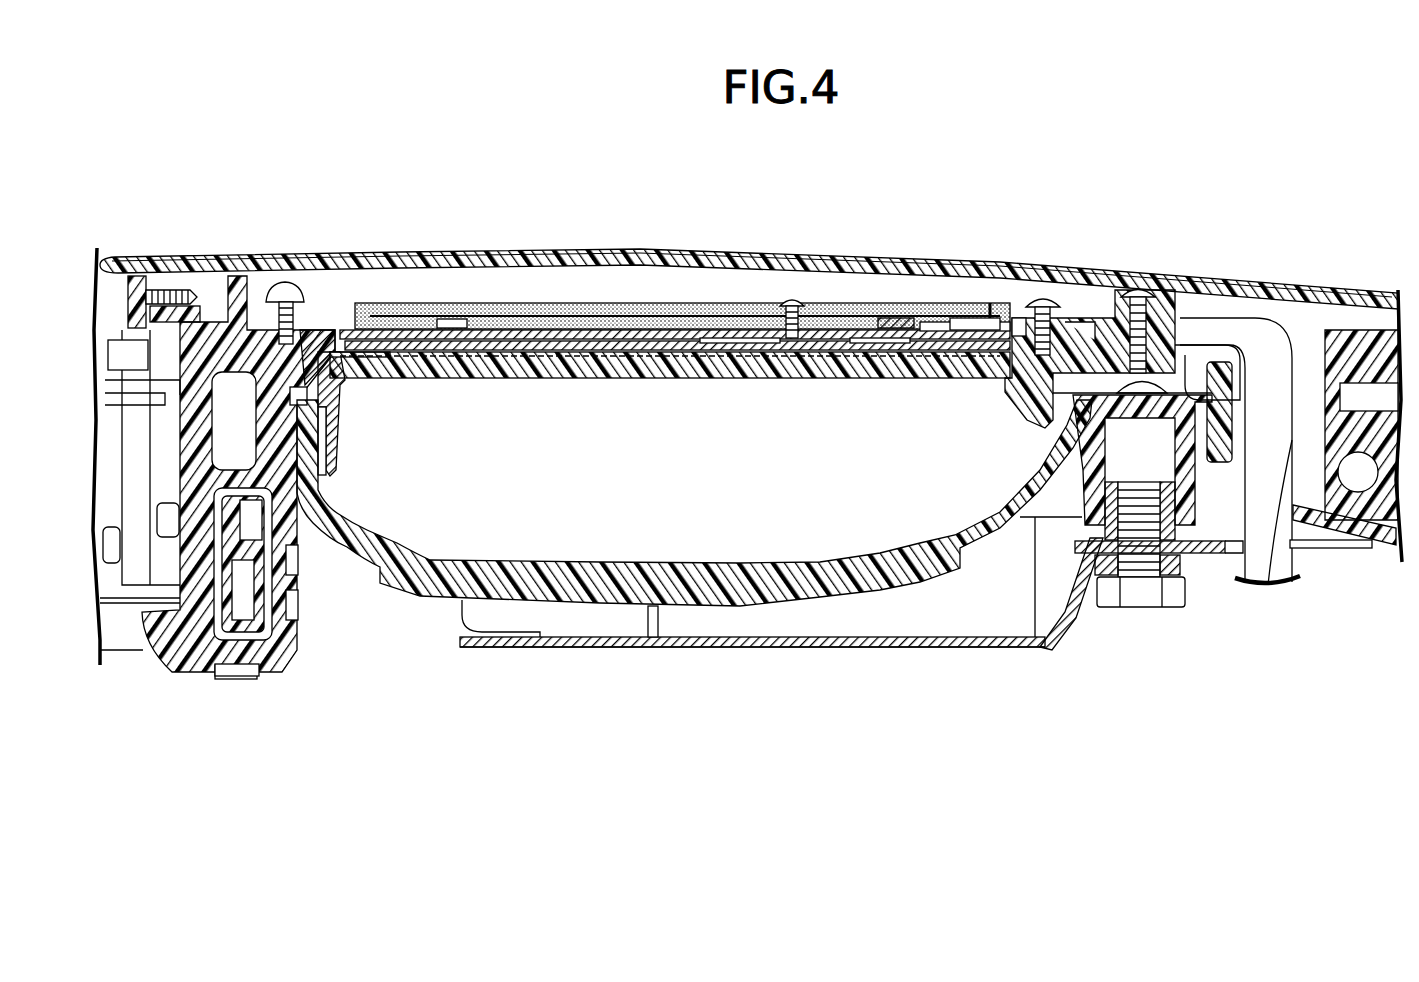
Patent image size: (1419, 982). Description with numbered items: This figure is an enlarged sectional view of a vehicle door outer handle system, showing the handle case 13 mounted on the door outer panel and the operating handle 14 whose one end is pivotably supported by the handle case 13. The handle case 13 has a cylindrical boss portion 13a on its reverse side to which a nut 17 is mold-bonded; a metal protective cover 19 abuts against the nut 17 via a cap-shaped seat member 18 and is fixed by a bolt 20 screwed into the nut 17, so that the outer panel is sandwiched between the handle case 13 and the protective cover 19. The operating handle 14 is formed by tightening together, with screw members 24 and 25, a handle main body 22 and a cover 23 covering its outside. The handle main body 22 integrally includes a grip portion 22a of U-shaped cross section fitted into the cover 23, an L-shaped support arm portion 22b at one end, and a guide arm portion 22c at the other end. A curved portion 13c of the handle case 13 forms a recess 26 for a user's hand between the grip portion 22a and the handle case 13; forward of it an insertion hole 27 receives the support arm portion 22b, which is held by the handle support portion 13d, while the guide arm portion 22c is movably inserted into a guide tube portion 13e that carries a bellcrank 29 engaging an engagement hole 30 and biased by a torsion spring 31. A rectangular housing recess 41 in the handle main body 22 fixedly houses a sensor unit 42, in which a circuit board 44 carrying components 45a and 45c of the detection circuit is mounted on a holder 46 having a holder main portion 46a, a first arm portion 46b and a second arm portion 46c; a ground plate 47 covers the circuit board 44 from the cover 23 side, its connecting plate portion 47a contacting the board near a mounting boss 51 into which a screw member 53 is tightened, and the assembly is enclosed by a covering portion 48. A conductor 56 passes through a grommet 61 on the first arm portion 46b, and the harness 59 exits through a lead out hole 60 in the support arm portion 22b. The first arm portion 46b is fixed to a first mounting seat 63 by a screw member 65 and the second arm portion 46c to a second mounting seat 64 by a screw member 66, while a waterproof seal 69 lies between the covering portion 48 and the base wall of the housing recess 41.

The handle case 13 is at (775, 612).
The cylindrical boss portion 13a is at (1085, 480).
The curved portion 13c is at (652, 637).
The handle support portion 13d is at (1352, 522).
The guide tube portion 13e is at (298, 605).
The operating handle 14 is at (780, 256).
The nut 17 is at (1235, 553).
The cap-shaped seat member 18 is at (1065, 604).
The protective cover 19 is at (865, 648).
The bolt 20 is at (1143, 607).
The handle main body 22 is at (627, 382).
The grip portion 22a is at (575, 364).
The support arm portion 22b is at (1396, 562).
The guide arm portion 22c is at (262, 672).
The cover 23 is at (610, 263).
The screw member 24 is at (1150, 290).
The screw member 25 is at (210, 274).
The recess 26 is at (688, 536).
The insertion hole 27 is at (1205, 410).
The bellcrank 29 is at (262, 565).
The engagement hole 30 is at (185, 600).
The torsion spring 31 is at (150, 527).
The housing recess 41 is at (415, 318).
The sensor unit 42 is at (728, 300).
The circuit board 44 is at (670, 325).
The component 45a is at (455, 320).
The component 45c is at (705, 328).
The holder 46 is at (990, 320).
The holder main portion 46a is at (870, 348).
The first arm portion 46b is at (1090, 320).
The second arm portion 46c is at (318, 300).
The ground plate 47 is at (530, 328).
The connecting plate portion 47a is at (835, 325).
The covering portion 48 is at (905, 316).
The mounting boss 51 is at (815, 348).
The screw member 53 is at (800, 300).
The conductor 56 is at (968, 330).
The harness 59 is at (1272, 330).
The lead out hole 60 is at (1272, 588).
The grommet 61 is at (940, 303).
The first mounting seat 63 is at (1012, 312).
The second mounting seat 64 is at (345, 330).
The screw member 65 is at (1042, 300).
The screw member 66 is at (284, 282).
The waterproof seal 69 is at (430, 355).